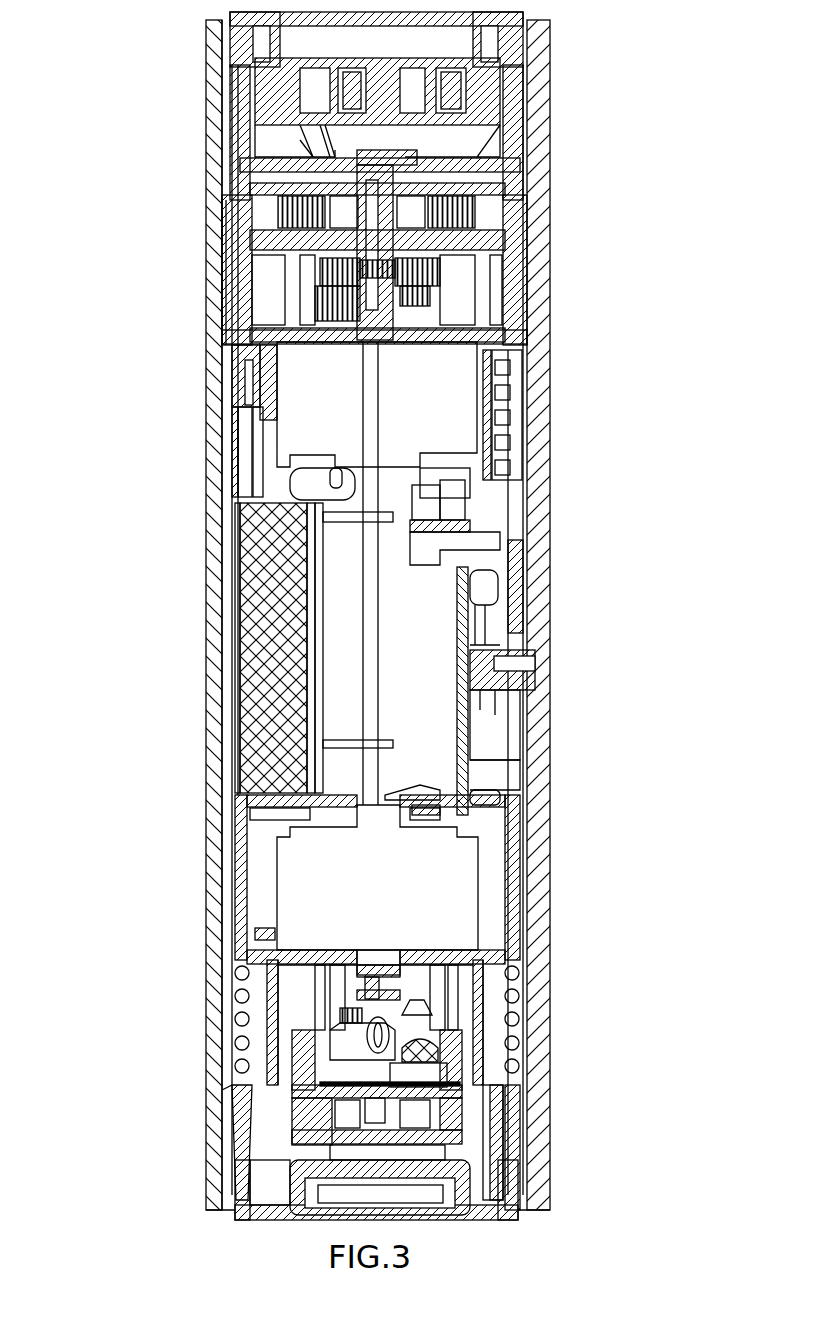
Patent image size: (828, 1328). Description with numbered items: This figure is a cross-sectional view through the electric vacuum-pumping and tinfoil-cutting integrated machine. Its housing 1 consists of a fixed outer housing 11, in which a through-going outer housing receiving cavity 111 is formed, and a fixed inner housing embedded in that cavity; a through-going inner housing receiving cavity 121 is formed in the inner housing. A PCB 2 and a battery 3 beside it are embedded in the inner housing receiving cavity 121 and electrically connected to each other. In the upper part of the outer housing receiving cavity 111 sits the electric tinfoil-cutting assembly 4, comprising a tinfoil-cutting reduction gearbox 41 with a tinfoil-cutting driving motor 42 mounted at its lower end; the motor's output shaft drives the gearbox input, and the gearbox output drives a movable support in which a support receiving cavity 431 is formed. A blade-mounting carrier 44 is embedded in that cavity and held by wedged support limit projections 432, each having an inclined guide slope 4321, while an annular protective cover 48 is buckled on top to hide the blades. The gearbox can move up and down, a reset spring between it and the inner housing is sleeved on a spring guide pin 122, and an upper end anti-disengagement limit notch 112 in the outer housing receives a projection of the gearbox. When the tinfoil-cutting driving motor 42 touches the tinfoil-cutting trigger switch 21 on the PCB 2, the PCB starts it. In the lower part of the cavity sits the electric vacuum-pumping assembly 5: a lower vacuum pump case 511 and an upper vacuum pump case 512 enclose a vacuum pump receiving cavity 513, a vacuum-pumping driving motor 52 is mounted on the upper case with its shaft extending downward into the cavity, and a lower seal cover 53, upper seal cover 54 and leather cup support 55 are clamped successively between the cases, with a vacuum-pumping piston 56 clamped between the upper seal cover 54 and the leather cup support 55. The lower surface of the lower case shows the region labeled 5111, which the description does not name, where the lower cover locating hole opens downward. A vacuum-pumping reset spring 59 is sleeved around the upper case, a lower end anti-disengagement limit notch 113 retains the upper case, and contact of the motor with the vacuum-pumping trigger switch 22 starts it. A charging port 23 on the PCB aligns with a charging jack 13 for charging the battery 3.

The housing 1 is at (202, 672).
The fixed outer housing 11 is at (215, 776).
The outer housing receiving cavity 111 is at (500, 350).
The upper end anti-disengagement limit notch 112 is at (228, 208).
The lower end anti-disengagement limit notch 113 is at (225, 1093).
The inner housing receiving cavity 121 is at (345, 618).
The spring guide pin 122 is at (244, 398).
The charging jack 13 is at (530, 655).
The PCB 2 is at (490, 605).
The tinfoil-cutting trigger switch 21 is at (440, 510).
The vacuum-pumping trigger switch 22 is at (425, 793).
The charging port 23 is at (492, 690).
The battery 3 is at (270, 726).
The electric tinfoil-cutting assembly 4 is at (235, 180).
The tinfoil-cutting reduction gearbox 41 is at (478, 250).
The tinfoil-cutting driving motor 42 is at (415, 405).
The support receiving cavity 431 is at (435, 147).
The support limit projection 432 is at (312, 153).
The inclined guide slope 4321 is at (350, 133).
The blade-mounting carrier 44 is at (480, 70).
The protective cover 48 is at (240, 45).
The electric vacuum-pumping assembly 5 is at (300, 1060).
The vacuum-pumping driving motor 52 is at (315, 903).
The lower seal cover 53 is at (450, 1125).
The upper seal cover 54 is at (290, 1085).
The leather cup support 55 is at (440, 1065).
The vacuum-pumping piston 56 is at (425, 1035).
The vacuum-pumping reset spring 59 is at (240, 1020).
The lower vacuum pump case 511 is at (255, 1175).
The nozzle outlet 5111 is at (432, 1192).
The upper vacuum pump case 512 is at (268, 990).
The vacuum pump receiving cavity 513 is at (282, 1150).